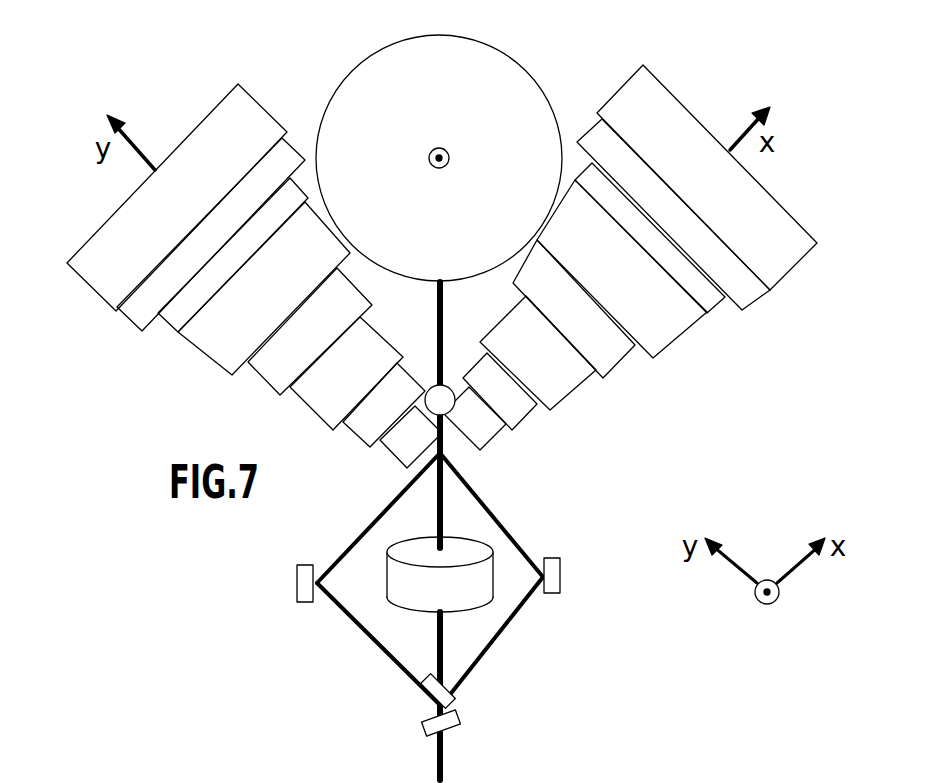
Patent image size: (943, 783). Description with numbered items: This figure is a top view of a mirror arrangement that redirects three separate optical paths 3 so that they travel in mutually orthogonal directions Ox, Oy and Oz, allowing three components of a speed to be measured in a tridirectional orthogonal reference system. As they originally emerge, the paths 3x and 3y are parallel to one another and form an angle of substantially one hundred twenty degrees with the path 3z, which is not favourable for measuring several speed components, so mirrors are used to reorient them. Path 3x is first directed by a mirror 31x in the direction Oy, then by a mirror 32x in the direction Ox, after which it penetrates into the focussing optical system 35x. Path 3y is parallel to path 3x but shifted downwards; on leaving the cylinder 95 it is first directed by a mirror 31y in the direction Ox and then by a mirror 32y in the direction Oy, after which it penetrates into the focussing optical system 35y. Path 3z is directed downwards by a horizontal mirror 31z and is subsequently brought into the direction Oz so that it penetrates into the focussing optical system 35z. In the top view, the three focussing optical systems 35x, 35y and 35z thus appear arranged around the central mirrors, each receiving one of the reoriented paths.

The paths 3 is at (438, 760).
The path 3x is at (376, 518).
The path 3y is at (494, 520).
The path 3z is at (445, 329).
The mirror 31x is at (452, 727).
The mirror 31y is at (450, 700).
The horizontal mirror 31z is at (432, 397).
The mirror 32x is at (296, 583).
The mirror 32y is at (561, 575).
The focussing optical system 35x is at (773, 268).
The focussing optical system 35y is at (96, 268).
The focussing optical system 35z is at (525, 88).
The cylinder 95 is at (405, 580).